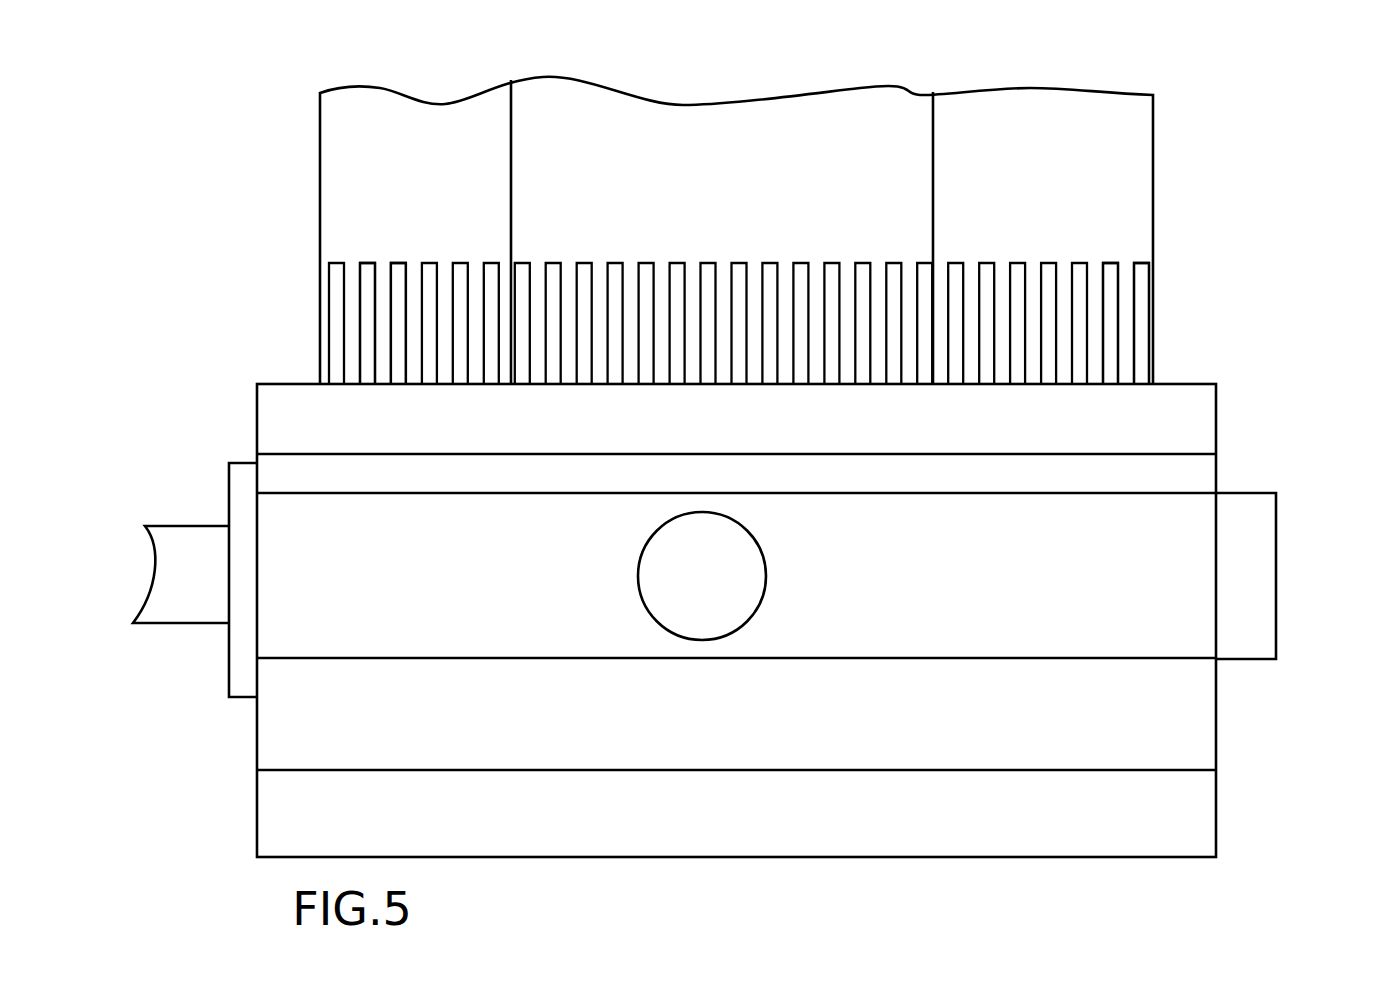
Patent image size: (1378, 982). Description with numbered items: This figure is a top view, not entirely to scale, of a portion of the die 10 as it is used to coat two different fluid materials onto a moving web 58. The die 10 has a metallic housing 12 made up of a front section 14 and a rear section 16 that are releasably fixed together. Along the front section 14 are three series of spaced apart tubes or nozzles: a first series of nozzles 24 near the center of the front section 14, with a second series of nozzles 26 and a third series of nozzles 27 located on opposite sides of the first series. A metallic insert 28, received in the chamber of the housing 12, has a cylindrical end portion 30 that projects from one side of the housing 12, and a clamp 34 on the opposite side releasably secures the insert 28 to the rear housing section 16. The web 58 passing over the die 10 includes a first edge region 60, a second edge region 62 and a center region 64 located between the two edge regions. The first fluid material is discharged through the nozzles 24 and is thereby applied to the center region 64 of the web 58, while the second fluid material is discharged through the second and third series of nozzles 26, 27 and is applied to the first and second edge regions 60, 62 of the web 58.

The die 10 is at (1281, 414).
The housing 12 is at (1230, 749).
The front section 14 is at (255, 397).
The rear section 16 is at (258, 752).
The first series of nozzles 24 is at (677, 263).
The second series of nozzles 26 is at (1143, 263).
The third series of nozzles 27 is at (397, 263).
The insert 28 is at (177, 521).
The end portion 30 is at (1276, 570).
The clamp 34 is at (242, 698).
The web 58 is at (337, 93).
The first edge region 60 is at (989, 158).
The second edge region 62 is at (436, 158).
The center region 64 is at (756, 158).